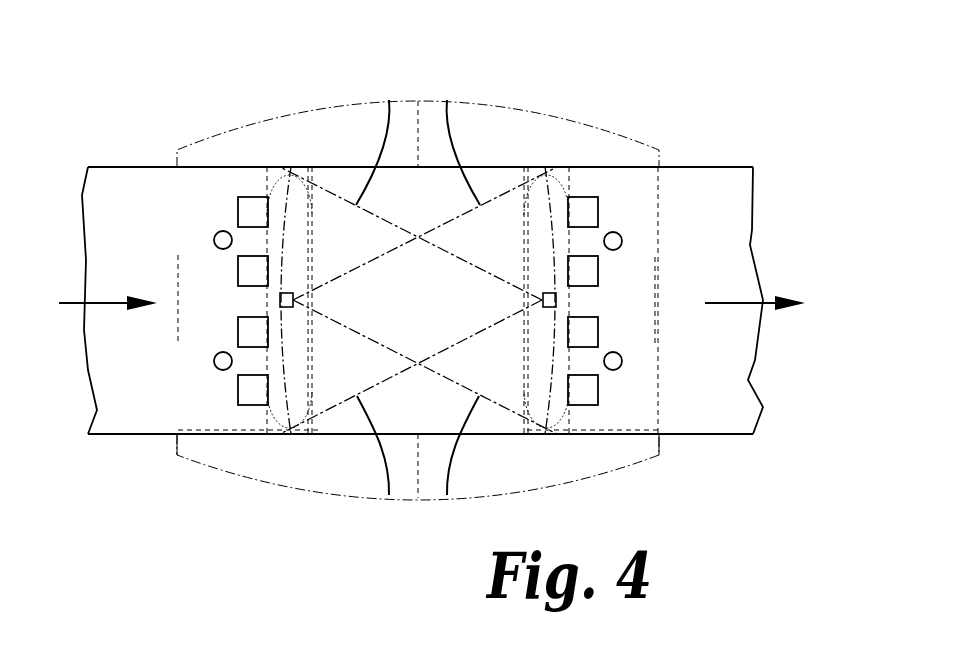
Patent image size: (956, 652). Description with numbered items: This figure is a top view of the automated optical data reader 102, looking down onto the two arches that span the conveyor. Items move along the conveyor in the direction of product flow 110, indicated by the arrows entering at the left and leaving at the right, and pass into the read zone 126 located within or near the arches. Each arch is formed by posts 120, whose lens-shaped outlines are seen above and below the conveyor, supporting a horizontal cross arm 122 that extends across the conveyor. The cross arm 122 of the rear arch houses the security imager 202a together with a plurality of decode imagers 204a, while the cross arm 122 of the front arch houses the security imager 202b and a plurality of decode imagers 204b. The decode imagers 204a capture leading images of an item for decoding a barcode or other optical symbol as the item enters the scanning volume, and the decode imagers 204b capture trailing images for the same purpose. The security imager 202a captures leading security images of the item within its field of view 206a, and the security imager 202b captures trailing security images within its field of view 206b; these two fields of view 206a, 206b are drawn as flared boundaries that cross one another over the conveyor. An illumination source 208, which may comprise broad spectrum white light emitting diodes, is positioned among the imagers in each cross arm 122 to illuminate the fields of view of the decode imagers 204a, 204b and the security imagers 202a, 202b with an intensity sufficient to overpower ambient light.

The automated optical data reader 102 is at (153, 103).
The direction of product flow 110 is at (78, 303).
The posts 120 is at (263, 118).
The cross arm 122 is at (177, 418).
The read zone 126 is at (396, 274).
The security imager 202a is at (543, 300).
The security imager 202b is at (293, 300).
The decode imagers 204a is at (599, 212).
The decode imagers 204b is at (237, 212).
The field of view 206a is at (389, 100).
The field of view 206b is at (447, 100).
The illumination source 208 is at (214, 240).